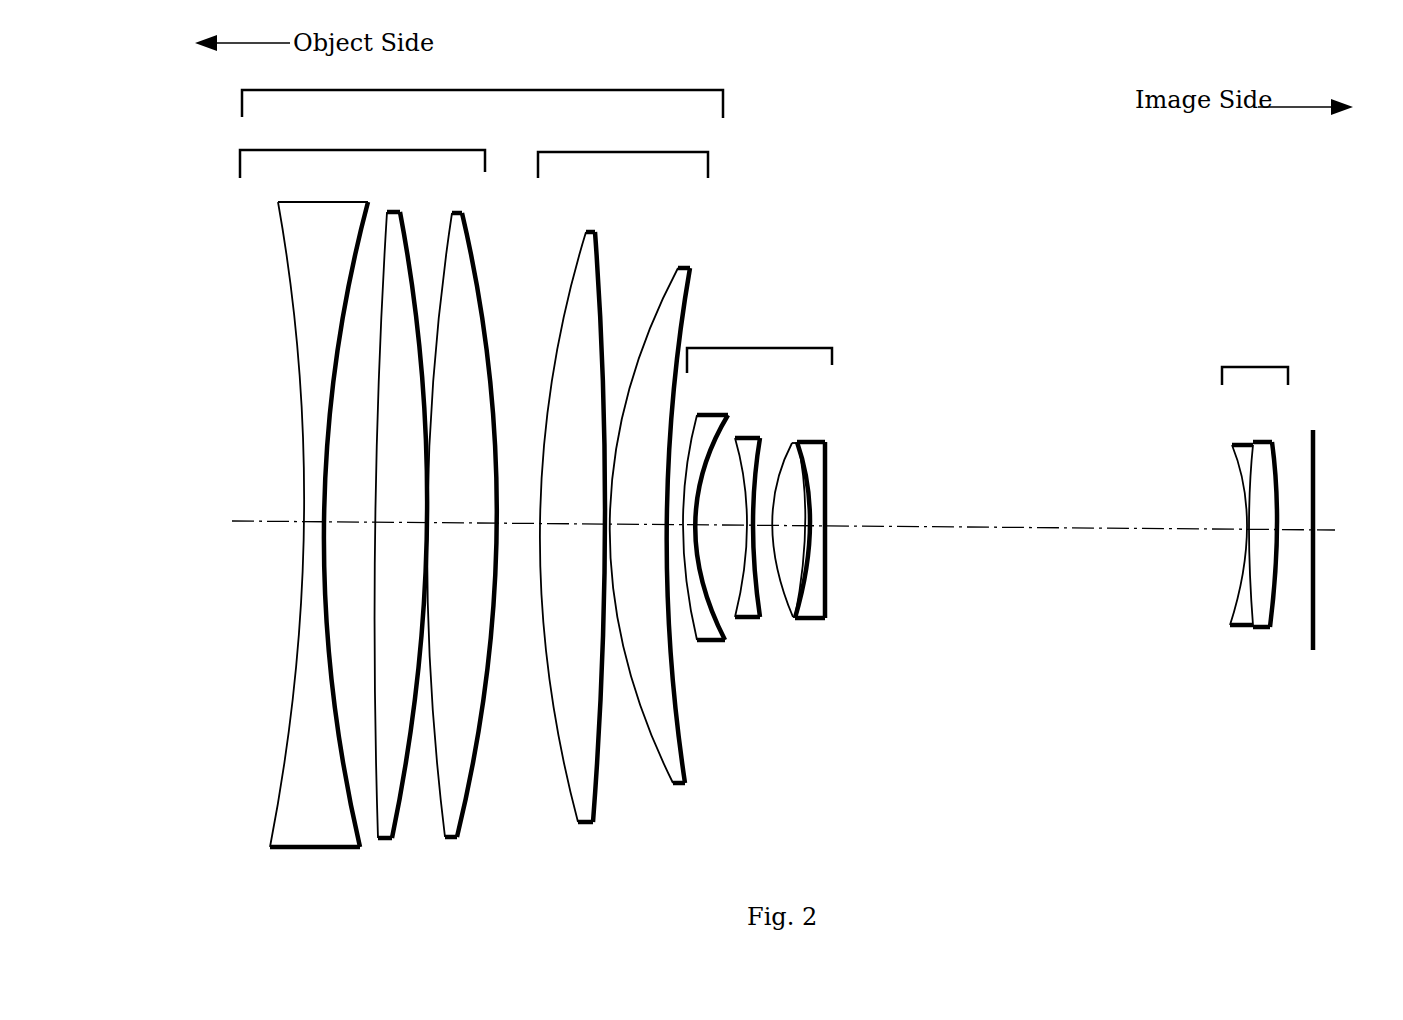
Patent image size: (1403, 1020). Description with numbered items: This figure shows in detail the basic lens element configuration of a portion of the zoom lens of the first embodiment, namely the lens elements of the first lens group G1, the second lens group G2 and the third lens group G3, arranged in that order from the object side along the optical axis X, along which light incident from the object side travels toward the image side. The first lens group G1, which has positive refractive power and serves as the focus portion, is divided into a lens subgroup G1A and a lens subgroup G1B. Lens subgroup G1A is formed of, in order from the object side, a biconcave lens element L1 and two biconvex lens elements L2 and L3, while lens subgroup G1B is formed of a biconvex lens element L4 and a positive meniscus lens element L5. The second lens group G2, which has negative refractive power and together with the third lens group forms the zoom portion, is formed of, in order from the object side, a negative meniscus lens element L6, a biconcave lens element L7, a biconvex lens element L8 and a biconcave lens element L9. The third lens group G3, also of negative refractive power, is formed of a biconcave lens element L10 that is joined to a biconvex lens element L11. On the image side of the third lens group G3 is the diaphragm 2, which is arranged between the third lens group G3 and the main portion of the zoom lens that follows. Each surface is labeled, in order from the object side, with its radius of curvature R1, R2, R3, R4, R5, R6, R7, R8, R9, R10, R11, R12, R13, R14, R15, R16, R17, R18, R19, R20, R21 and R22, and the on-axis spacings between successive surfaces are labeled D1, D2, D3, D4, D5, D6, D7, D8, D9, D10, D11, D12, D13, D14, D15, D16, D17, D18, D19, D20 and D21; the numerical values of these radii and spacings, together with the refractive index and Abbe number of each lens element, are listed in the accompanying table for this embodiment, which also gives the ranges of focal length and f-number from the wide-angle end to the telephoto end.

The first lens group G1 is at (482, 92).
The lens subgroup G1A is at (362, 150).
The lens subgroup G1B is at (623, 150).
The second lens group G2 is at (759, 347).
The third lens group G3 is at (1255, 360).
The biconcave lens element L1 is at (297, 531).
The biconvex lens element L2 is at (405, 527).
The biconvex lens element L3 is at (470, 524).
The biconvex lens element L4 is at (584, 534).
The positive meniscus lens element L5 is at (675, 531).
The negative meniscus lens element L6 is at (720, 525).
The biconcave lens element L7 is at (783, 518).
The biconvex lens element L8 is at (822, 530).
The biconcave lens element L9 is at (840, 550).
The biconcave lens element L10 is at (1225, 528).
The biconvex lens element L11 is at (1278, 539).
The diaphragm 2 is at (1328, 563).
The optical axis X is at (1068, 531).
The first refractive surface R1 is at (278, 236).
The second refractive surface R2 is at (355, 262).
The third refractive surface R3 is at (382, 245).
The fourth refractive surface R4 is at (405, 248).
The fifth refractive surface R5 is at (448, 246).
The sixth refractive surface R6 is at (470, 243).
The seventh refractive surface R7 is at (575, 262).
The eighth refractive surface R8 is at (603, 258).
The ninth refractive surface R9 is at (668, 294).
The tenth refractive surface R10 is at (696, 296).
The eleventh refractive surface R11 is at (690, 432).
The twelfth refractive surface R12 is at (712, 440).
The thirteenth refractive surface R13 is at (740, 470).
The fourteenth refractive surface R14 is at (762, 472).
The fifteenth refractive surface R15 is at (795, 460).
The sixteenth refractive surface R16 is at (804, 458).
The seventeenth refractive surface R17 is at (810, 472).
The eighteenth refractive surface R18 is at (828, 480).
The nineteenth refractive surface R19 is at (1234, 452).
The twentieth refractive surface R20 is at (1254, 448).
The twenty-first refractive surface R21 is at (1278, 450).
The twenty-second refractive surface R22 is at (1316, 466).
The axial thickness of first lens D1 is at (312, 522).
The axial air space D2 is at (352, 528).
The axial thickness of second lens D3 is at (392, 519).
The axial air space D4 is at (430, 525).
The axial thickness of third lens D5 is at (454, 519).
The axial air space D6 is at (515, 526).
The axial thickness of fourth lens D7 is at (572, 520).
The axial air space D8 is at (603, 524).
The axial thickness of fifth lens D9 is at (637, 521).
The axial air space D10 is at (677, 526).
The axial thickness of sixth lens D11 is at (690, 530).
The axial air space D12 is at (750, 530).
The axial thickness of seventh lens D13 is at (754, 523).
The axial air space D14 is at (802, 560).
The axial thickness of eighth lens D15 is at (806, 548).
The axial air space D16 is at (812, 542).
The axial thickness of ninth lens D17 is at (813, 512).
The axial air space D18 is at (992, 528).
The axial thickness of tenth lens D19 is at (1250, 535).
The axial thickness of eleventh lens D20 is at (1263, 540).
The axial air space to plate D21 is at (1300, 535).